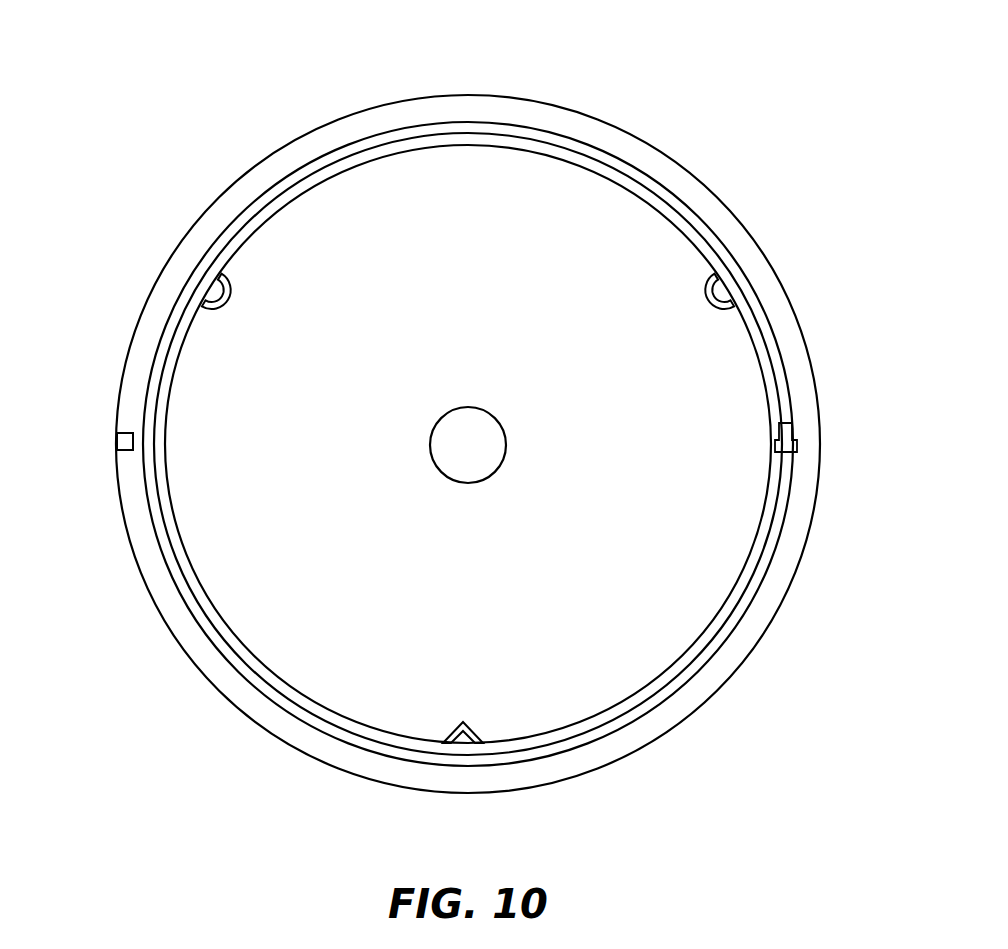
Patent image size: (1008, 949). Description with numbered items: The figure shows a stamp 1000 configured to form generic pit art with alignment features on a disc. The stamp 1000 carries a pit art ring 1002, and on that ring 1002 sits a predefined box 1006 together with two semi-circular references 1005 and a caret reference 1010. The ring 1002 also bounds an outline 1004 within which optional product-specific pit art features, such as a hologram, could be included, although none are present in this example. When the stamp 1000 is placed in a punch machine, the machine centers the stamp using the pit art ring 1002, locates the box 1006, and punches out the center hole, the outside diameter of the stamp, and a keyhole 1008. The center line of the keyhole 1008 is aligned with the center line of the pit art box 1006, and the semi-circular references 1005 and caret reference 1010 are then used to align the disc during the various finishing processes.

The stamp 1000 is at (463, 96).
The ring 1002 is at (548, 134).
The outline 1004 is at (629, 190).
The semi-circular references 1005 is at (230, 272).
The predefined box 1006 is at (782, 432).
The keyhole 1008 is at (127, 433).
The caret reference 1010 is at (440, 729).